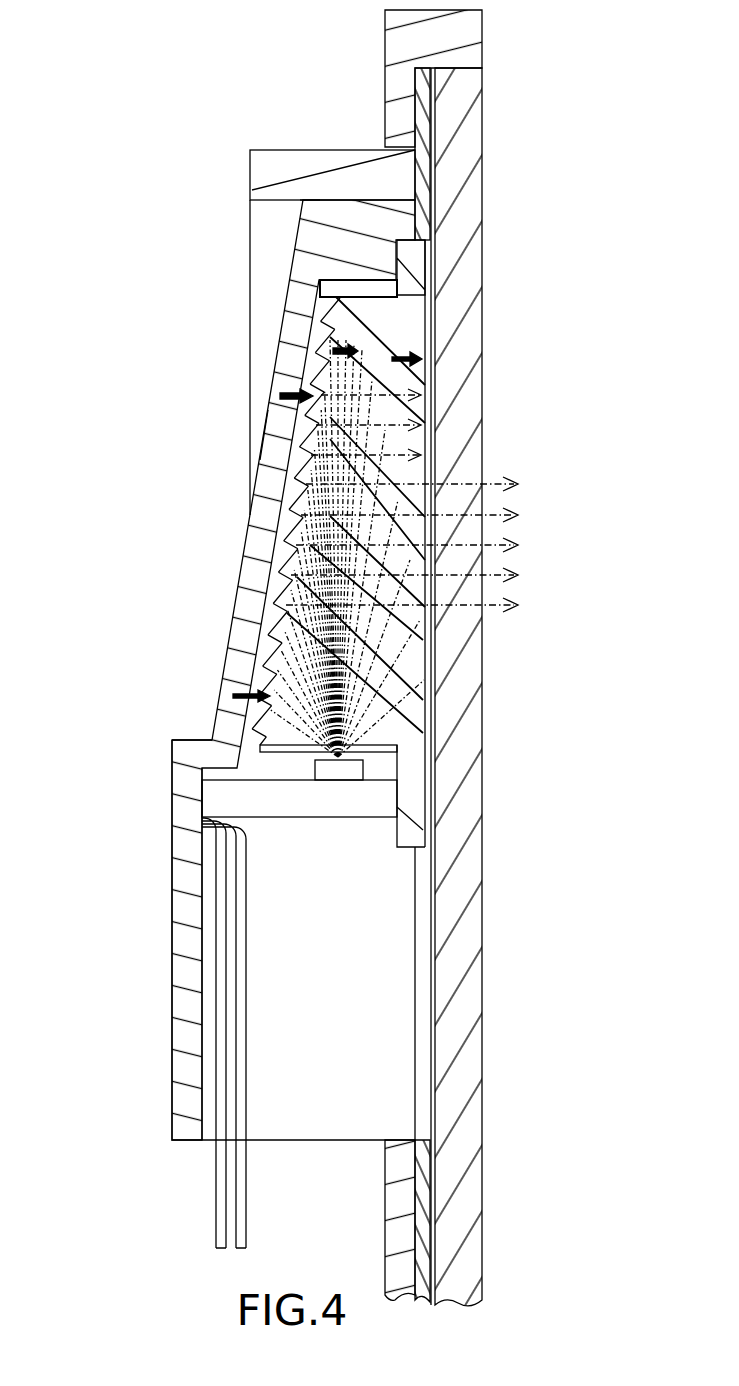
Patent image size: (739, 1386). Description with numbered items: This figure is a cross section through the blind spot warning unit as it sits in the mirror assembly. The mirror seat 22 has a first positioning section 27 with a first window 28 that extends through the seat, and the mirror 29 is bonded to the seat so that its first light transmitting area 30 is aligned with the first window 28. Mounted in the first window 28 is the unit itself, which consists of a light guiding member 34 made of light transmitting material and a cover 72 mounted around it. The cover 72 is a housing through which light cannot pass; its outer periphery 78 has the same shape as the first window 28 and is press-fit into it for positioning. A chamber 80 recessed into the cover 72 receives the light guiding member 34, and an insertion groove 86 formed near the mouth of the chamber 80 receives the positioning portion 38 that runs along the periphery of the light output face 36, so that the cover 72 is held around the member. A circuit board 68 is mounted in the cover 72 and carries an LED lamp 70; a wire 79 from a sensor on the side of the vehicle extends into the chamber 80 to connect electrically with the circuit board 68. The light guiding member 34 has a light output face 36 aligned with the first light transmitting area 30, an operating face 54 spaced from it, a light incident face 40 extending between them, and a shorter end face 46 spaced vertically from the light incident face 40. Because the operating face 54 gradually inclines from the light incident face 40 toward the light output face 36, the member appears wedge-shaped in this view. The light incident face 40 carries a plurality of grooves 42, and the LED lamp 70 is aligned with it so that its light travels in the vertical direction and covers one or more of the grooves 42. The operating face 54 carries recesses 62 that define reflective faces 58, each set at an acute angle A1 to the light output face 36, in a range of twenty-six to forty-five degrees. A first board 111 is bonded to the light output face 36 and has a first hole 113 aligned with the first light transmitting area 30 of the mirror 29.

The mirror seat 22 is at (475, 47).
The first positioning section 27 is at (260, 174).
The first window 28 is at (263, 244).
The mirror 29 is at (470, 318).
The first light transmitting area 30 is at (437, 558).
The light guiding member 34 is at (222, 697).
The light output face 36 is at (400, 738).
The positioning portion 38 is at (408, 832).
The light incident face 40 is at (323, 753).
The grooves 42 is at (370, 753).
The end face 46 is at (363, 297).
The operating face 54 is at (280, 396).
The reflective faces 58 is at (297, 512).
The recesses 62 is at (297, 535).
The circuit board 68 is at (327, 805).
The LED lamp 70 is at (285, 790).
The cover 72 is at (265, 437).
The outer periphery 78 is at (313, 200).
The wire 79 is at (217, 1190).
The chamber 80 is at (345, 1045).
The insertion groove 86 is at (397, 262).
The first board 111 is at (412, 390).
The first hole 113 is at (413, 455).
The acute angle A1 is at (372, 358).